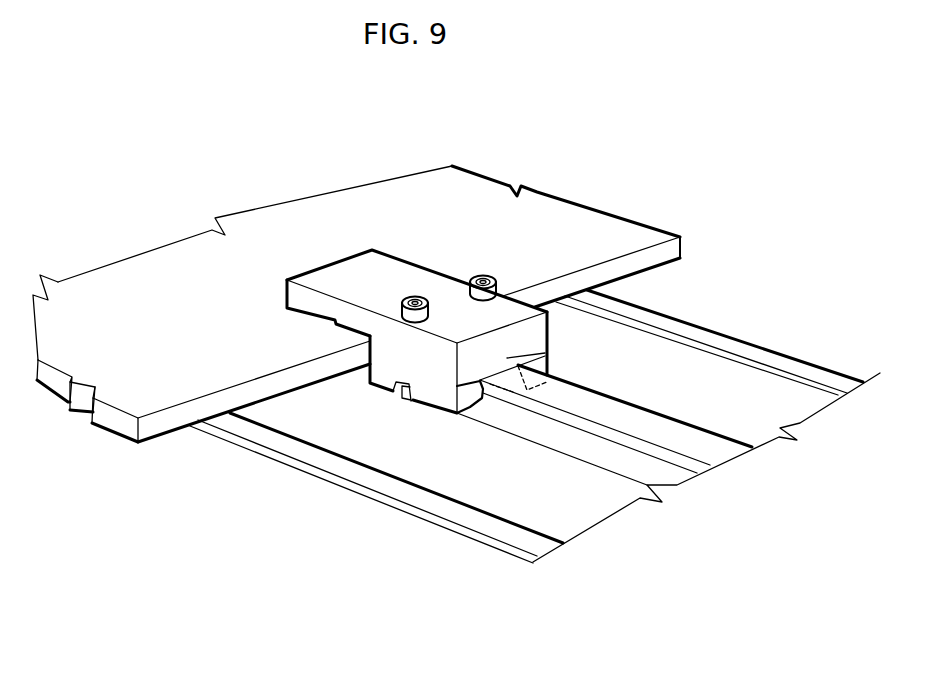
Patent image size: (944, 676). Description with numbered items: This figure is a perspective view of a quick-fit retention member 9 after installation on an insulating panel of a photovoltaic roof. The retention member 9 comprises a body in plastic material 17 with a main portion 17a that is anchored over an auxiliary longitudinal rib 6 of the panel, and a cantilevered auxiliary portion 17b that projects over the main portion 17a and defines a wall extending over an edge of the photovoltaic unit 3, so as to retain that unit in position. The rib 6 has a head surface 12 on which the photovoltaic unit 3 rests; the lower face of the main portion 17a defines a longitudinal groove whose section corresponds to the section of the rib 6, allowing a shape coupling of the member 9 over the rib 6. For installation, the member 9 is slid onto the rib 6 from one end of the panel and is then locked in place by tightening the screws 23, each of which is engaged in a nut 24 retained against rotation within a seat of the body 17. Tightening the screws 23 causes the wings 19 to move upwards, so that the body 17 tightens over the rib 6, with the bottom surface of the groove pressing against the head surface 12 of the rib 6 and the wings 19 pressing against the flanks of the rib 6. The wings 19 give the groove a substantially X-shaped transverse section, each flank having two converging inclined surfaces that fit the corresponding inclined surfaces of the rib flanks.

The photovoltaic unit 3 is at (148, 303).
The retention member 9 is at (360, 249).
The body in plastic material 17 is at (433, 366).
The main portion 17a is at (392, 359).
The cantilevered auxiliary portion 17b is at (293, 294).
The wings 19 is at (472, 398).
The screw 23 is at (424, 297).
The nut 24 is at (402, 396).
The auxiliary longitudinal rib 6 is at (759, 391).
The head surface 12 is at (698, 449).